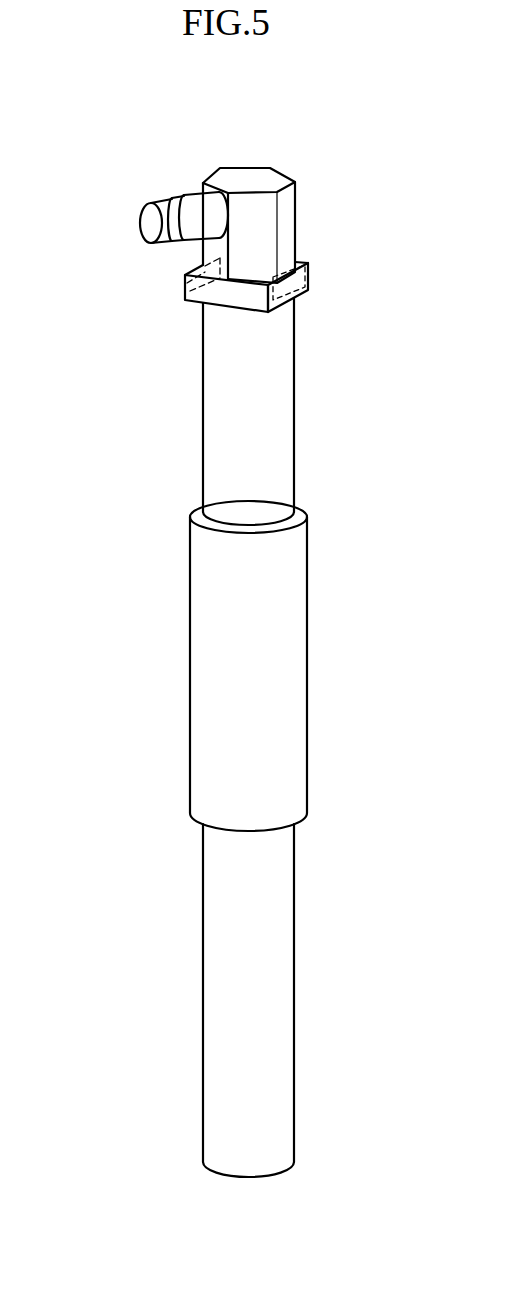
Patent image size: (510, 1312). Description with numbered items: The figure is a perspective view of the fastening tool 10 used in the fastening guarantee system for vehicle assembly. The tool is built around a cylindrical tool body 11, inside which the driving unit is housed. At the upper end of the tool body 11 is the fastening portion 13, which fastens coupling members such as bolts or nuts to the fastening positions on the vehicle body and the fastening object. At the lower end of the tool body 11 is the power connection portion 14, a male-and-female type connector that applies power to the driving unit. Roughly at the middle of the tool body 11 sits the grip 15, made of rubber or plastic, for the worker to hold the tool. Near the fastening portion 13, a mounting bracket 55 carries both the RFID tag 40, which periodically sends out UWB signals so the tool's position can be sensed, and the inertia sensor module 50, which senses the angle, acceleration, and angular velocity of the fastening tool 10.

The fastening tool 10 is at (258, 113).
The tool body 11 is at (203, 455).
The fastening portion 13 is at (150, 222).
The power connection portion 14 is at (203, 995).
The grip 15 is at (298, 662).
The RFID tag 40 is at (180, 286).
The inertia sensor module 50 is at (308, 290).
The mounting bracket 55 is at (308, 272).